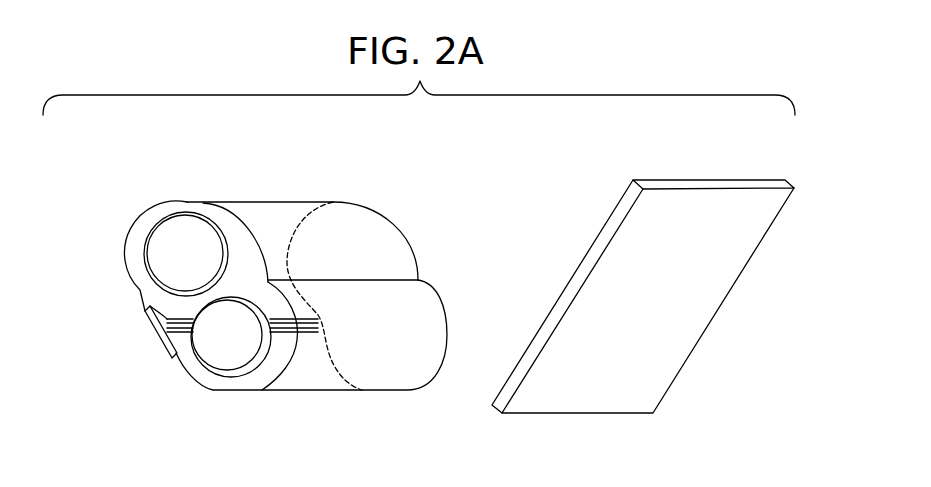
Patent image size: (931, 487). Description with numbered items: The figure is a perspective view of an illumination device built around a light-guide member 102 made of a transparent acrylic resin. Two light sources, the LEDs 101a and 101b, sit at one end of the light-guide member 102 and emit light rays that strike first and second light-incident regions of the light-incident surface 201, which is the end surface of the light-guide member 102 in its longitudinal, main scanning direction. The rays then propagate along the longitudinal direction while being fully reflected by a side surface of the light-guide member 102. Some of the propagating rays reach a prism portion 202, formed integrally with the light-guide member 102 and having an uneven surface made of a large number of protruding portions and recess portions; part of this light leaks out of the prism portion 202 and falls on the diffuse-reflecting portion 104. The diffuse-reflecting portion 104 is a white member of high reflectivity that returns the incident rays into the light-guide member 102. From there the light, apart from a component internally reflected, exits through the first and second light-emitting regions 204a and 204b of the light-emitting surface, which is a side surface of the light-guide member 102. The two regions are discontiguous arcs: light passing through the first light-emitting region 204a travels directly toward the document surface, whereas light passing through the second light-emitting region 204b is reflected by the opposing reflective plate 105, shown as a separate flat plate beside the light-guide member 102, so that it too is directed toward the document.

The LED 101a is at (165, 240).
The LED 101b is at (233, 357).
The light-guide member 102 is at (239, 202).
The diffuse-reflecting portion 104 is at (148, 333).
The opposing reflective plate 105 is at (676, 338).
The light-incident surface 201 is at (205, 216).
The prism portion 202 is at (318, 320).
The first light-emitting region 204a is at (288, 215).
The second light-emitting region 204b is at (358, 290).